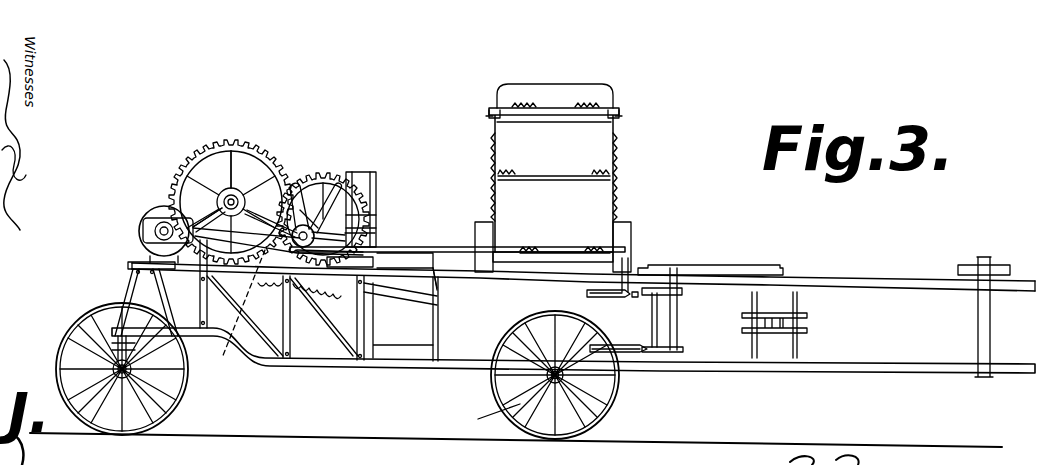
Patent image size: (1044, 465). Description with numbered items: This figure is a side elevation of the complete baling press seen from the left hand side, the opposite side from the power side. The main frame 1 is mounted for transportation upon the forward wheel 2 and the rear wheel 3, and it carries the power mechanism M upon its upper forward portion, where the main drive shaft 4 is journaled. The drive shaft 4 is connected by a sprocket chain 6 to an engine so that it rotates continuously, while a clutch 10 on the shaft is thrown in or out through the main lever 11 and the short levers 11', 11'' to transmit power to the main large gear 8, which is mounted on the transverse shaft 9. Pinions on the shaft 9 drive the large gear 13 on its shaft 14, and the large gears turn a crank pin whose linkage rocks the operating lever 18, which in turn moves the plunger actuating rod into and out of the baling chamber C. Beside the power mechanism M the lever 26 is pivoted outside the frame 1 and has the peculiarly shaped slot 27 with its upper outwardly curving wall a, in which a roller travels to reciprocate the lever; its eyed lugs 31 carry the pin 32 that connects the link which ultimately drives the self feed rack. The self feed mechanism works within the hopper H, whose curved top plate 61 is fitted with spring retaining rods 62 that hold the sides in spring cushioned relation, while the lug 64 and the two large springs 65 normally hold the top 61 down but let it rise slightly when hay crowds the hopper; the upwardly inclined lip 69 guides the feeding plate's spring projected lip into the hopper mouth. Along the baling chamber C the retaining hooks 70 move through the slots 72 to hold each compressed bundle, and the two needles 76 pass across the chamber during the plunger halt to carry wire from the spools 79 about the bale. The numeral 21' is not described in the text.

The main frame 1 is at (384, 358).
The forward wheel 2 is at (180, 392).
The rear wheel 3 is at (490, 412).
The baling chamber C is at (475, 403).
The main drive shaft 4 is at (160, 232).
The sprocket chain 6 is at (296, 182).
The main large gear 8 is at (193, 167).
The shaft 9 is at (229, 198).
The clutch 10 is at (150, 217).
The power mechanism M is at (242, 169).
The main lever 11 is at (457, 235).
The short lever 11' is at (565, 228).
The short lever 11'' is at (459, 290).
The large gear 13 is at (332, 200).
The shaft 14 is at (430, 252).
The operating lever 18 is at (232, 333).
The frame panel 21' is at (400, 320).
The lever 26 is at (316, 196).
The slot 27 is at (312, 196).
The eyed lugs 31 is at (377, 183).
The pin 32 is at (377, 211).
The upper outwardly curving wall a is at (342, 210).
The hopper H is at (622, 142).
The curved top plate 61 is at (600, 130).
The spring retaining rods 62 is at (512, 105).
The lug 64 is at (490, 112).
The large springs 65 is at (492, 157).
The upwardly inclined lip 69 is at (566, 86).
The retaining hooks 70 is at (640, 350).
The slots 72 is at (660, 330).
The needles 76 is at (642, 292).
The spools 79 is at (796, 347).